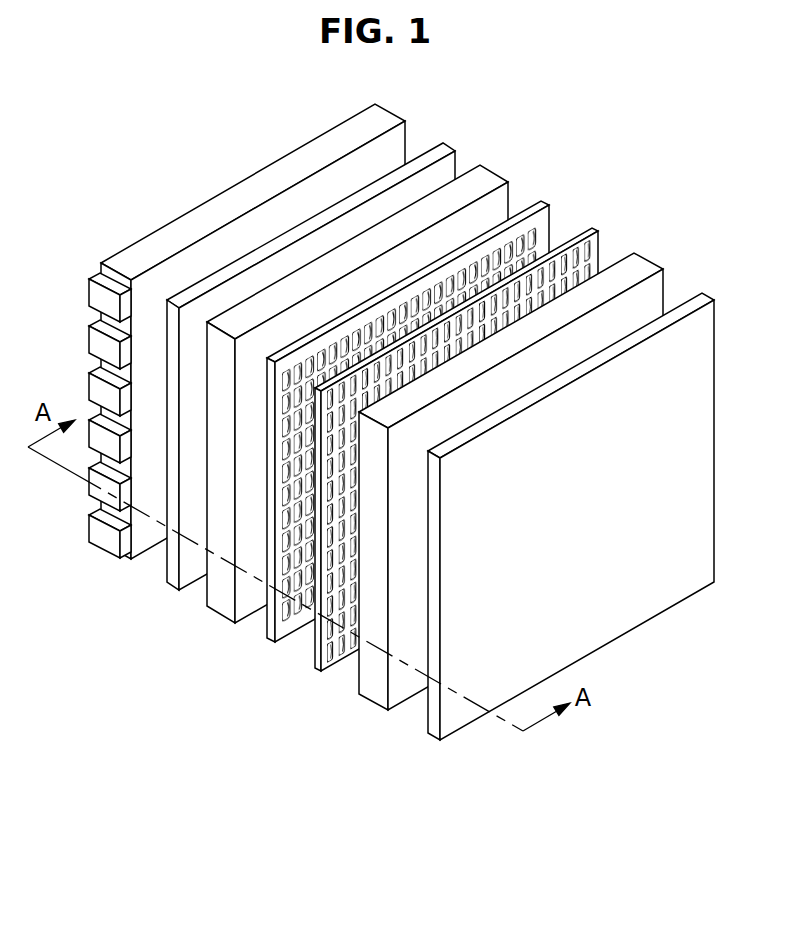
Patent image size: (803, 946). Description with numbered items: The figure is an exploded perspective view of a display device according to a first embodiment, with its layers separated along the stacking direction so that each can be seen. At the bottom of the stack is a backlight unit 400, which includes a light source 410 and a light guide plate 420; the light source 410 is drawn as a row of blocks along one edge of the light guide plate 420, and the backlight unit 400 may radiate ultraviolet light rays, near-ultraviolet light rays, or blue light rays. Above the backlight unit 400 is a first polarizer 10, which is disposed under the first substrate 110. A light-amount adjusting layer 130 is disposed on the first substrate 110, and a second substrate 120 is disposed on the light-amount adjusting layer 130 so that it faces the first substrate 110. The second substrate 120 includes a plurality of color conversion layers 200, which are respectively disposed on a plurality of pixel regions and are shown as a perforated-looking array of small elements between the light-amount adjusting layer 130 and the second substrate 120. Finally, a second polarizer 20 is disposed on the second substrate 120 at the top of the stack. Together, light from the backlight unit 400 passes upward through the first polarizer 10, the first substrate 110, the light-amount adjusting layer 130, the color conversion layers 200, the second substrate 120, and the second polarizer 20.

The backlight unit 400 is at (236, 331).
The light source 410 is at (100, 298).
The light guide plate 420 is at (143, 250).
The first polarizer 10 is at (173, 575).
The first substrate 110 is at (222, 603).
The light-amount adjusting layer 130 is at (271, 637).
The color conversion layers 200 is at (318, 663).
The second substrate 120 is at (375, 690).
The second polarizer 20 is at (435, 723).